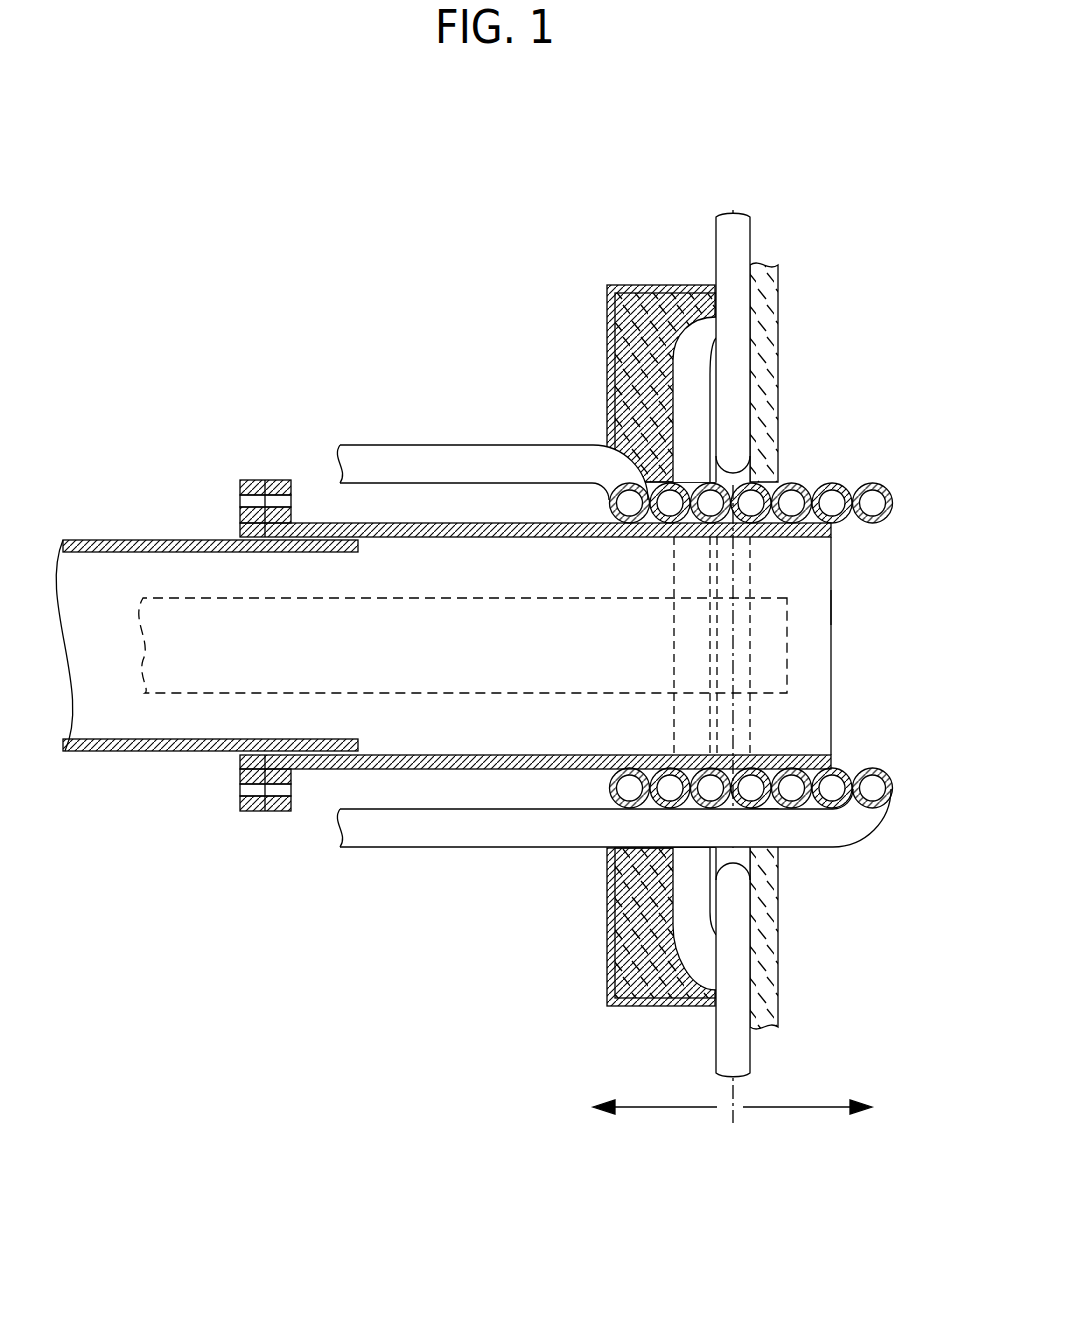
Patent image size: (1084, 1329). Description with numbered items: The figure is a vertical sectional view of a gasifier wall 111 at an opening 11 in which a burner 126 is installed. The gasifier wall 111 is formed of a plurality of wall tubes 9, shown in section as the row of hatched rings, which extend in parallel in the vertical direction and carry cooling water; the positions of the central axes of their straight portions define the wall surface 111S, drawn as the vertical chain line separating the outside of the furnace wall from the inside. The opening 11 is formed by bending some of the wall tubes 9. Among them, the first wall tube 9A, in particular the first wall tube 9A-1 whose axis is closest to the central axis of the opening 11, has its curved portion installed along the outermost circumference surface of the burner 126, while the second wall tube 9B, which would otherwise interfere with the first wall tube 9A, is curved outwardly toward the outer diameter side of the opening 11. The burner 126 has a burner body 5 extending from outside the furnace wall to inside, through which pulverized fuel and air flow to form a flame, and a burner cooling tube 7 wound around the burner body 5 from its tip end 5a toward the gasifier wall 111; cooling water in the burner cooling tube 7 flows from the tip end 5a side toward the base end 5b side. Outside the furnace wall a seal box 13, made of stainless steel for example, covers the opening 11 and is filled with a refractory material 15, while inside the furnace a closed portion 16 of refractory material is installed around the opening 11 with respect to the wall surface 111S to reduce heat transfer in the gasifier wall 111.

The burner body 5 is at (458, 520).
The tip end of the burner body 5a is at (831, 697).
The base end of the burner body 5b is at (105, 752).
The burner cooling tube 7 is at (849, 472).
The wall tube 9 is at (623, 598).
The first wall tube 9A is at (667, 598).
The first wall tube closest to the opening axis 9A-1 is at (660, 1037).
The second wall tube 9B is at (678, 356).
The opening 11 is at (751, 598).
The seal box 13 is at (628, 604).
The refractory material 15 is at (633, 320).
The closed portion 16 is at (767, 307).
The gasifier wall 111 is at (732, 713).
The wall surface 111S is at (737, 963).
The burner 126 is at (853, 607).